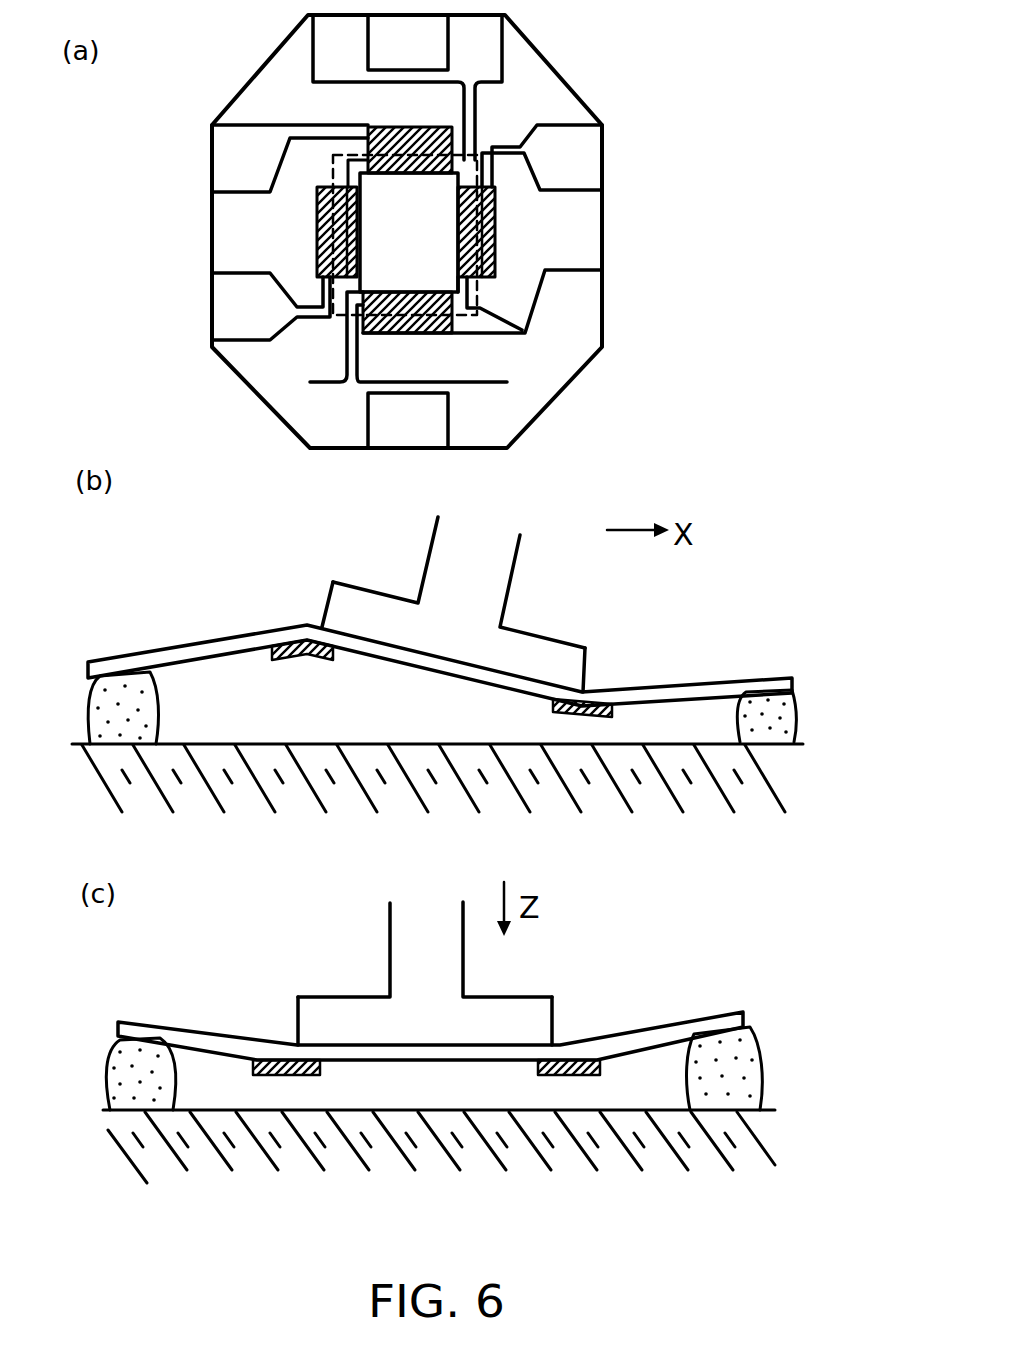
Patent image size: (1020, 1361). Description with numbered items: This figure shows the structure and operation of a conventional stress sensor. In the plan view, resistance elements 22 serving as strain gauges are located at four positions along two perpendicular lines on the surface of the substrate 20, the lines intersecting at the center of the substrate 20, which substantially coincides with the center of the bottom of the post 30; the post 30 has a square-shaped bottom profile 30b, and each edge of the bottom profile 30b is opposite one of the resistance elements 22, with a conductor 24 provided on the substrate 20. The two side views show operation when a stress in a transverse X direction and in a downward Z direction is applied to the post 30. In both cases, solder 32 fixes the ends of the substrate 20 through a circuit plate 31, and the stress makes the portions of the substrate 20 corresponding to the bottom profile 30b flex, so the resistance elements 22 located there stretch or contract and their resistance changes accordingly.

The substrate 20 is at (577, 90).
The resistance element 22 is at (490, 230).
The conductor 24 is at (603, 163).
The post 30 is at (437, 575).
The bottom profile of the post 30b is at (528, 335).
The circuit plate 31 is at (454, 783).
The solder 32 is at (127, 685).